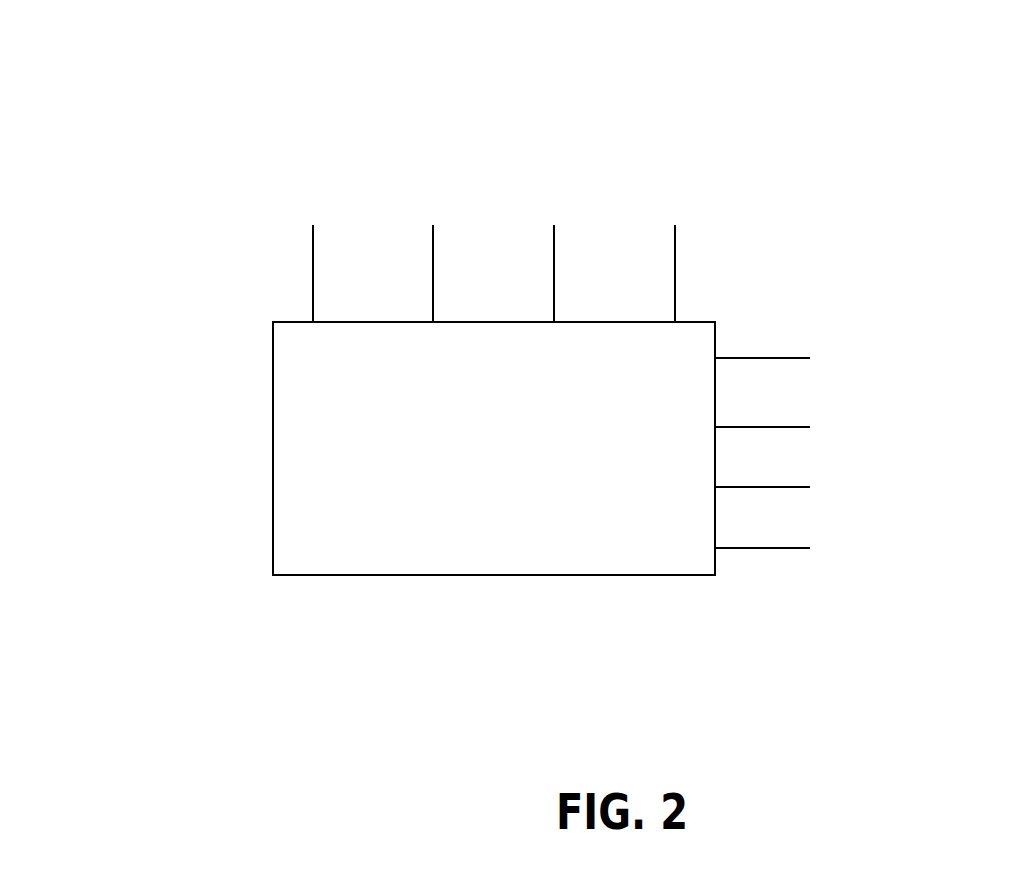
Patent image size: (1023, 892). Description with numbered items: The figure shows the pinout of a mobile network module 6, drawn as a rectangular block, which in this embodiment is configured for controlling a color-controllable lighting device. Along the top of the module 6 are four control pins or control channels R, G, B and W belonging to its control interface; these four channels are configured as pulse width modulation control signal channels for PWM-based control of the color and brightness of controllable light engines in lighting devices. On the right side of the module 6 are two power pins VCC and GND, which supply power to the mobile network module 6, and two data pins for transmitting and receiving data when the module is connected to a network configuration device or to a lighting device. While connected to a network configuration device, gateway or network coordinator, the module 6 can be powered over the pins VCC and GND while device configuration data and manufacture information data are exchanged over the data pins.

The mobile network module 6 is at (152, 109).
The control pin R is at (312, 251).
The control pin G is at (432, 251).
The control pin B is at (552, 251).
The control pin W is at (678, 251).
The power pin VCC is at (810, 357).
The power pin GND is at (813, 426).